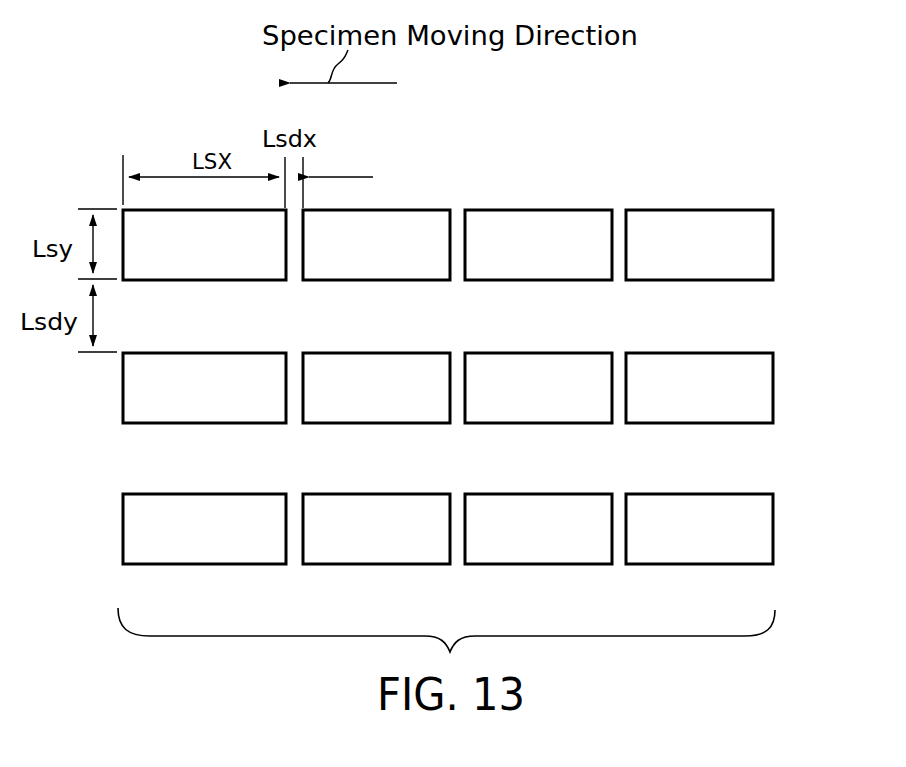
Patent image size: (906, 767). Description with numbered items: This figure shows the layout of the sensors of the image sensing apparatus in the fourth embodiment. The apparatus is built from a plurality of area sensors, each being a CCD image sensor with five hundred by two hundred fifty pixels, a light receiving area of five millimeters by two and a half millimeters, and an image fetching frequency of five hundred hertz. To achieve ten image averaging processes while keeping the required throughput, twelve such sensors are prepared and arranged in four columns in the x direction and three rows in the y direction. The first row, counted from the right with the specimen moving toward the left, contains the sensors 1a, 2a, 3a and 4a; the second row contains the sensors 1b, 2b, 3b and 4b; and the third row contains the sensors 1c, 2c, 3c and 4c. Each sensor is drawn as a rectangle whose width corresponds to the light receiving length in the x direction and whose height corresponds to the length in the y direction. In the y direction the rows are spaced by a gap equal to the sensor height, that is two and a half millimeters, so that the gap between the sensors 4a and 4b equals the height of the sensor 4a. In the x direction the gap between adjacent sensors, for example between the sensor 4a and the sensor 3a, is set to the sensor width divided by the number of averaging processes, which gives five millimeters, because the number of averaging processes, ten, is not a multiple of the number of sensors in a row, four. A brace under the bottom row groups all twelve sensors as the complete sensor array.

The sensor 4a is at (204, 262).
The sensor 3a is at (376, 262).
The sensor 2a is at (538, 262).
The sensor 1a is at (699, 262).
The sensor 4b is at (204, 405).
The sensor 3b is at (376, 405).
The sensor 2b is at (538, 405).
The sensor 1b is at (699, 405).
The sensor 4c is at (204, 546).
The sensor 3c is at (376, 546).
The sensor 2c is at (538, 546).
The sensor 1c is at (699, 546).